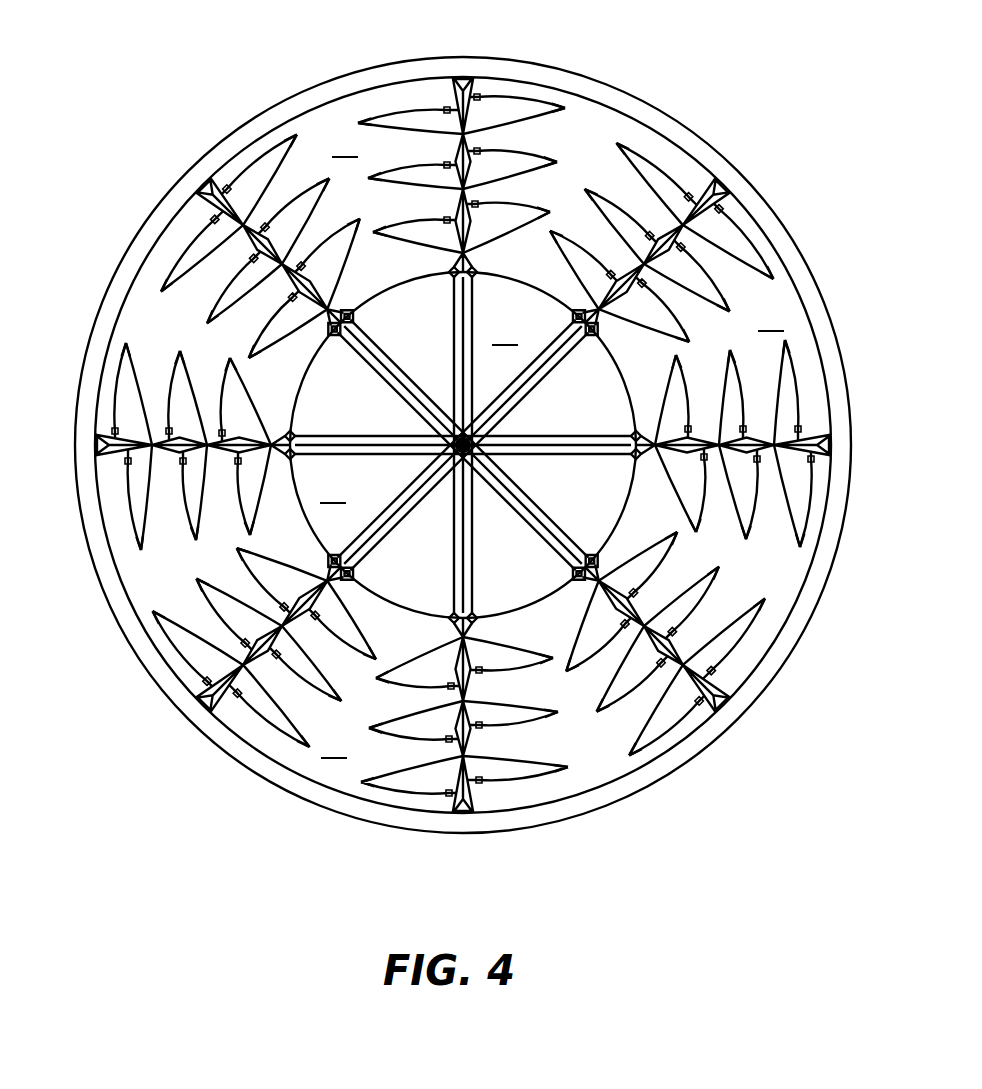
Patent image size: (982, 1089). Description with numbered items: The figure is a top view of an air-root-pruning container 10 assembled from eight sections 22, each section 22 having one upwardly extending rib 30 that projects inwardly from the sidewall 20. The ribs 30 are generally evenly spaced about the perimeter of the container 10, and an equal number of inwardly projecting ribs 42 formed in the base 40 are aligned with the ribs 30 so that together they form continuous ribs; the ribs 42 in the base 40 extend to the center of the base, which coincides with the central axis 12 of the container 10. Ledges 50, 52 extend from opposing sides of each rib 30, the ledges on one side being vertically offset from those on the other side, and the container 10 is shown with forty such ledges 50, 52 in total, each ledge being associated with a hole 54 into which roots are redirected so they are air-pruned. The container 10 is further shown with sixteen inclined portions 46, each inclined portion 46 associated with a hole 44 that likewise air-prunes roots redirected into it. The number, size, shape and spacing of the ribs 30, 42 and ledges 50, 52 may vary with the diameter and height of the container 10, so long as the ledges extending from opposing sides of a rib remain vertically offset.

The air-root-pruning container 10 is at (231, 104).
The central axis 12 is at (503, 424).
The sidewall 20 is at (553, 445).
The section 22 is at (600, 90).
The rib 30 is at (452, 95).
The base 40 is at (463, 445).
The rib 42 is at (400, 397).
The hole 44 is at (348, 308).
The inclined portion 46 is at (345, 322).
The ledge 50 is at (208, 312).
The ledge 52 is at (355, 221).
The hole 54 is at (303, 195).